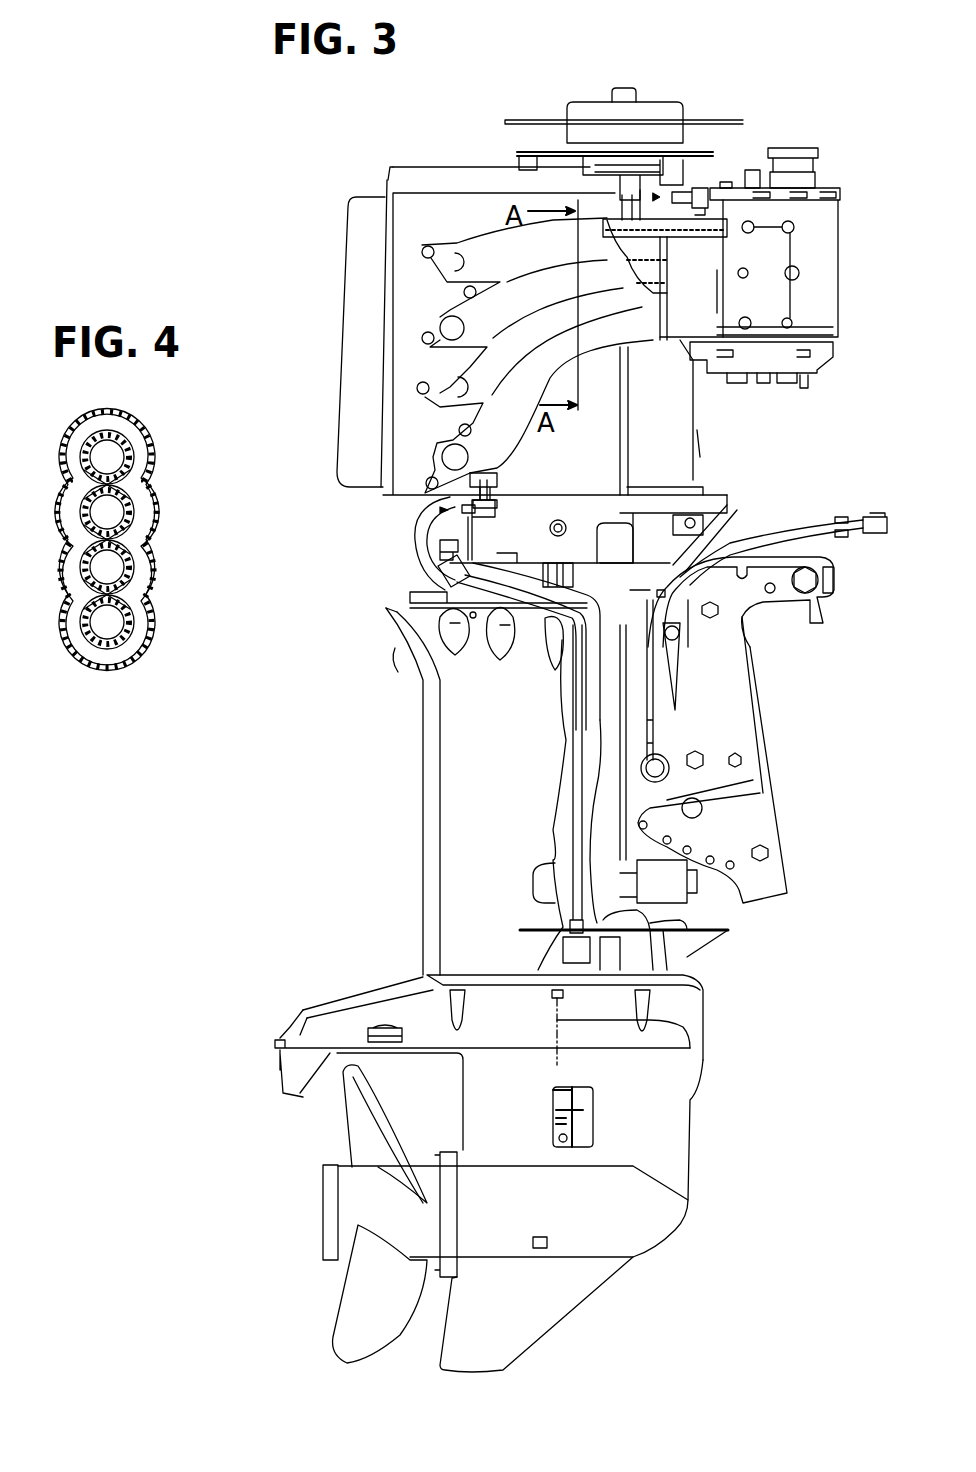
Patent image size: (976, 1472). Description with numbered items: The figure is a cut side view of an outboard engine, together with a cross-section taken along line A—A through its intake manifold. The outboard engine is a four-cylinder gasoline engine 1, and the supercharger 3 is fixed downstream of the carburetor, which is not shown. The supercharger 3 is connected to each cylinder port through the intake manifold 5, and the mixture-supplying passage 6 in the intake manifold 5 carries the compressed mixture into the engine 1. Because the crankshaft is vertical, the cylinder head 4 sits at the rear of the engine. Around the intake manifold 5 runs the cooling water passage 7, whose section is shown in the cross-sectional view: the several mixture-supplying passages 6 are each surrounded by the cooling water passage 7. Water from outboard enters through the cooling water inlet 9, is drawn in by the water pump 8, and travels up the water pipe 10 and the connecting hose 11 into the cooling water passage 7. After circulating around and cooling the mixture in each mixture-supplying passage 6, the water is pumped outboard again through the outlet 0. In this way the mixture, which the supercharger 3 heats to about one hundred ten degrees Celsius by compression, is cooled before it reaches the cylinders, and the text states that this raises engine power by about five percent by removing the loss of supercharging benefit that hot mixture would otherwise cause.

In FIG. 3, the engine 1 is at (483, 163).
In FIG. 3, the supercharger 3 is at (822, 268).
In FIG. 3, the cylinder head 4 is at (412, 200).
In FIG. 3, the intake manifold 5 is at (493, 240).
In FIG. 4, the intake manifold 5 is at (60, 583).
In FIG. 3, the mixture-supplying passage 6 is at (650, 240).
In FIG. 4, the mixture-supplying passage 6 is at (117, 450).
In FIG. 3, the cooling water passage 7 is at (647, 238).
In FIG. 4, the cooling water passage 7 is at (73, 500).
In FIG. 3, the water pump 8 is at (630, 953).
In FIG. 3, the cooling water inlet 9 is at (583, 1110).
In FIG. 3, the water pipe 10 is at (570, 787).
In FIG. 3, the connecting hose 11 is at (425, 540).
In FIG. 3, the outlet 0 is at (700, 195).